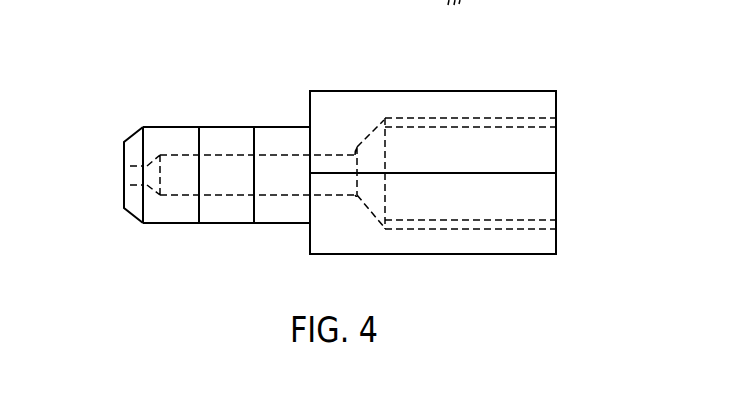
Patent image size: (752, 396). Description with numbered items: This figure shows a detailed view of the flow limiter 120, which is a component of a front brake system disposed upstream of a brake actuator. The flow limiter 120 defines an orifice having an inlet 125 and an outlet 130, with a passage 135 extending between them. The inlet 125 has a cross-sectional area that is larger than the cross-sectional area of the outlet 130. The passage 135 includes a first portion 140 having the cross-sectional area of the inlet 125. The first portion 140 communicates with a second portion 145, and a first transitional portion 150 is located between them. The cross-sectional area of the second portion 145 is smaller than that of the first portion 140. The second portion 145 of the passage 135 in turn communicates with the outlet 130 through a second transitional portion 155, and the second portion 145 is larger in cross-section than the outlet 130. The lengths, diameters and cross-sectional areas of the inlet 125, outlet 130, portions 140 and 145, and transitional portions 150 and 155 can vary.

The flow limiter 120 is at (376, 155).
The inlet 125 is at (560, 143).
The outlet 130 is at (119, 184).
The passage 135 is at (425, 145).
The first portion 140 is at (477, 214).
The second portion 145 is at (298, 190).
The first transitional portion 150 is at (365, 132).
The second transitional portion 155 is at (150, 202).